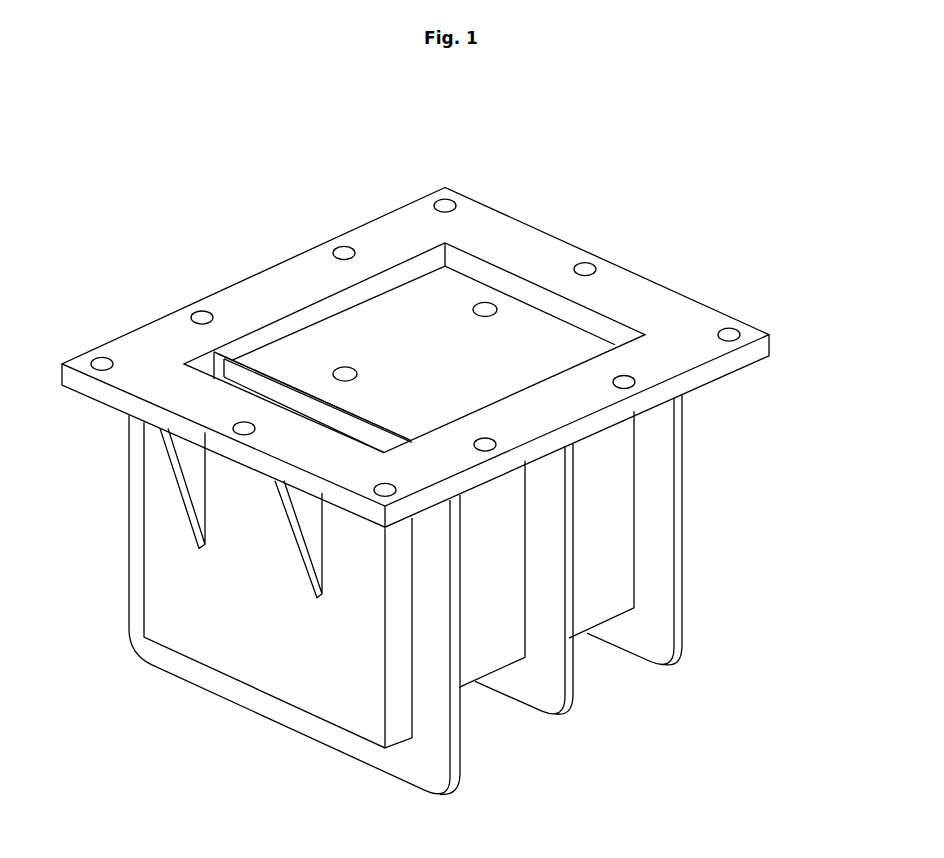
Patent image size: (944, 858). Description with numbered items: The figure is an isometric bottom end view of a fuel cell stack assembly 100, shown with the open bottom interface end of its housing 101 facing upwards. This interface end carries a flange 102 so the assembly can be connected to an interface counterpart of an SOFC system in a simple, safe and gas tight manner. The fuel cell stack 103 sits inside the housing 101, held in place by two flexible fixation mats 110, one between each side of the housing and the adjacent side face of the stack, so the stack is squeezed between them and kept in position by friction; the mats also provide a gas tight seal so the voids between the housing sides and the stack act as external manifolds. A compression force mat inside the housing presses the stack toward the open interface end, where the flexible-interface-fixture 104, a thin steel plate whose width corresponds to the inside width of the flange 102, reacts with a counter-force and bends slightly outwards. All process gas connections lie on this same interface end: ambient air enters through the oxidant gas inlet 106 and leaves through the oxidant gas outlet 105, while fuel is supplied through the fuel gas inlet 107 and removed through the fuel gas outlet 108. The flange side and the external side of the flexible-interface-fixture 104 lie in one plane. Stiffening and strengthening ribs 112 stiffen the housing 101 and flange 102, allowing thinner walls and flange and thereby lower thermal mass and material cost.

The fuel cell stack assembly 100 is at (228, 155).
The housing 101 is at (627, 543).
The flange 102 is at (518, 232).
The fuel cell stack 103 is at (218, 354).
The flexible-interface-fixture 104 is at (433, 400).
The oxidant gas outlet 105 is at (508, 283).
The oxidant gas inlet 106 is at (330, 418).
The fuel gas inlet 107 is at (352, 372).
The fuel gas outlet 108 is at (492, 308).
The flexible fixation mats 110 is at (403, 440).
The stiffening and strengthening ribs 112 is at (674, 608).